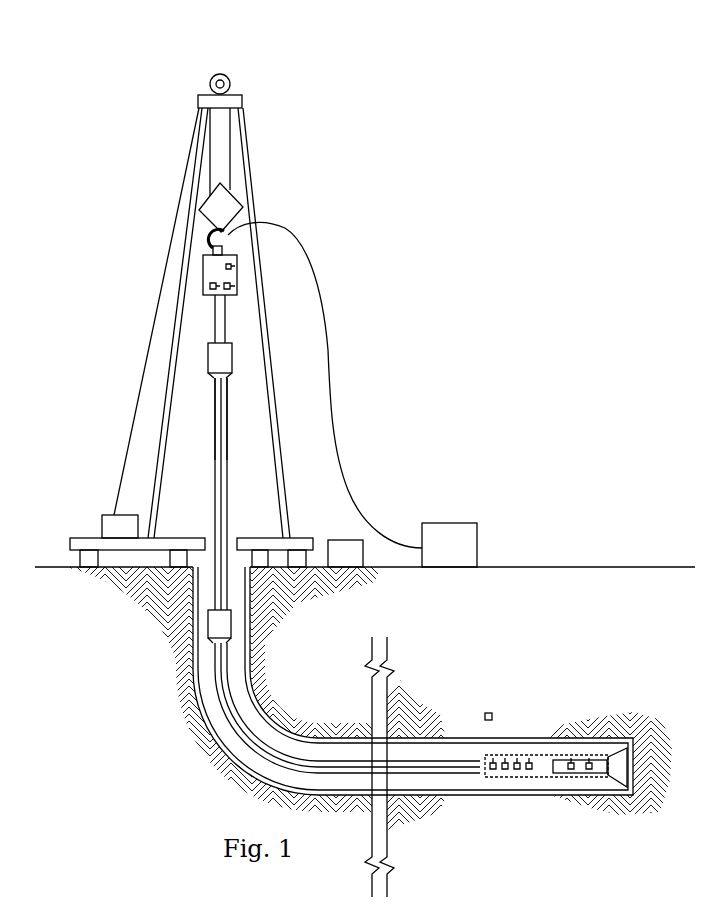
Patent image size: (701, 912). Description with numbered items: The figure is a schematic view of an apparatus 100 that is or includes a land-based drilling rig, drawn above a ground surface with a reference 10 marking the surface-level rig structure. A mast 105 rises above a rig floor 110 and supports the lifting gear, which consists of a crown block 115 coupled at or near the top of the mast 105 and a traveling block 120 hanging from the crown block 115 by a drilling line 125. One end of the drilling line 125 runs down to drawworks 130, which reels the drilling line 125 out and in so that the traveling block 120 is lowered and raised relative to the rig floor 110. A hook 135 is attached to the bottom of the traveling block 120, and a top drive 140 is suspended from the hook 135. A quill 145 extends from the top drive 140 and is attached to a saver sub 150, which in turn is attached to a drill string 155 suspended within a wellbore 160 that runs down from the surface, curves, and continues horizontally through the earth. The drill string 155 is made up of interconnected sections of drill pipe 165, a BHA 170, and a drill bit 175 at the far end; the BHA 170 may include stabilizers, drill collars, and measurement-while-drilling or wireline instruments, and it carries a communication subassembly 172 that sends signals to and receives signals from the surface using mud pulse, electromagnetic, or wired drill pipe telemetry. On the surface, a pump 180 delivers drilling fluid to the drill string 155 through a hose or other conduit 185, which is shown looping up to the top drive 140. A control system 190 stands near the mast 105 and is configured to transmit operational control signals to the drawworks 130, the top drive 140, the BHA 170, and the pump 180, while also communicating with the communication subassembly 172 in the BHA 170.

The rig floor platform 10 is at (70, 546).
The apparatus 100 is at (498, 130).
The mast 105 is at (249, 140).
The rig floor 110 is at (265, 538).
The crown block 115 is at (218, 73).
The traveling block 120 is at (243, 230).
The drilling line 125 is at (197, 140).
The drawworks 130 is at (101, 530).
The hook 135 is at (207, 237).
The top drive 140 is at (203, 272).
The quill 145 is at (215, 318).
The saver sub 150 is at (208, 358).
The drill string 155 is at (207, 410).
The wellbore 160 is at (206, 726).
The drill pipe 165 is at (214, 530).
The BHA 170 is at (589, 782).
The communication subassembly 172 is at (486, 712).
The drill bit 175 is at (635, 715).
The pump 180 is at (448, 523).
The conduit 185 is at (331, 357).
The control system 190 is at (345, 540).